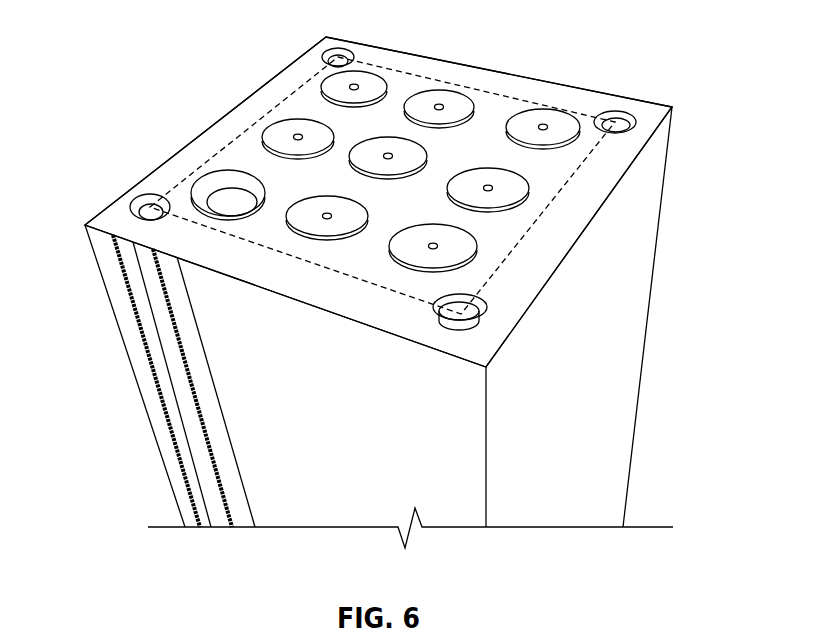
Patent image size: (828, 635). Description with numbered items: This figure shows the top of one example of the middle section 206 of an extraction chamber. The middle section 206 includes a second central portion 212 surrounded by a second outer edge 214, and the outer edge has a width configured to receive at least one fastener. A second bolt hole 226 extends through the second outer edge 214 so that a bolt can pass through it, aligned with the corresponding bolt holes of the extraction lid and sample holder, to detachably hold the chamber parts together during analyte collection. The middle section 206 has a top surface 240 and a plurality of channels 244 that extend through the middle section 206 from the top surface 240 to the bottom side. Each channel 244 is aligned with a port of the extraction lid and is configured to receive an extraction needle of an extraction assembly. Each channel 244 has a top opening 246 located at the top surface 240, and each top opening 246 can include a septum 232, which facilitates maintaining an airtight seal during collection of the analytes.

The middle section 206 is at (536, 47).
The second central portion 212 is at (248, 152).
The second outer edge 214 is at (203, 153).
The second bolt hole 226 is at (330, 50).
The septum 232 is at (306, 229).
The top surface 240 is at (313, 100).
The channel 244 is at (210, 222).
The top opening 246 is at (193, 180).